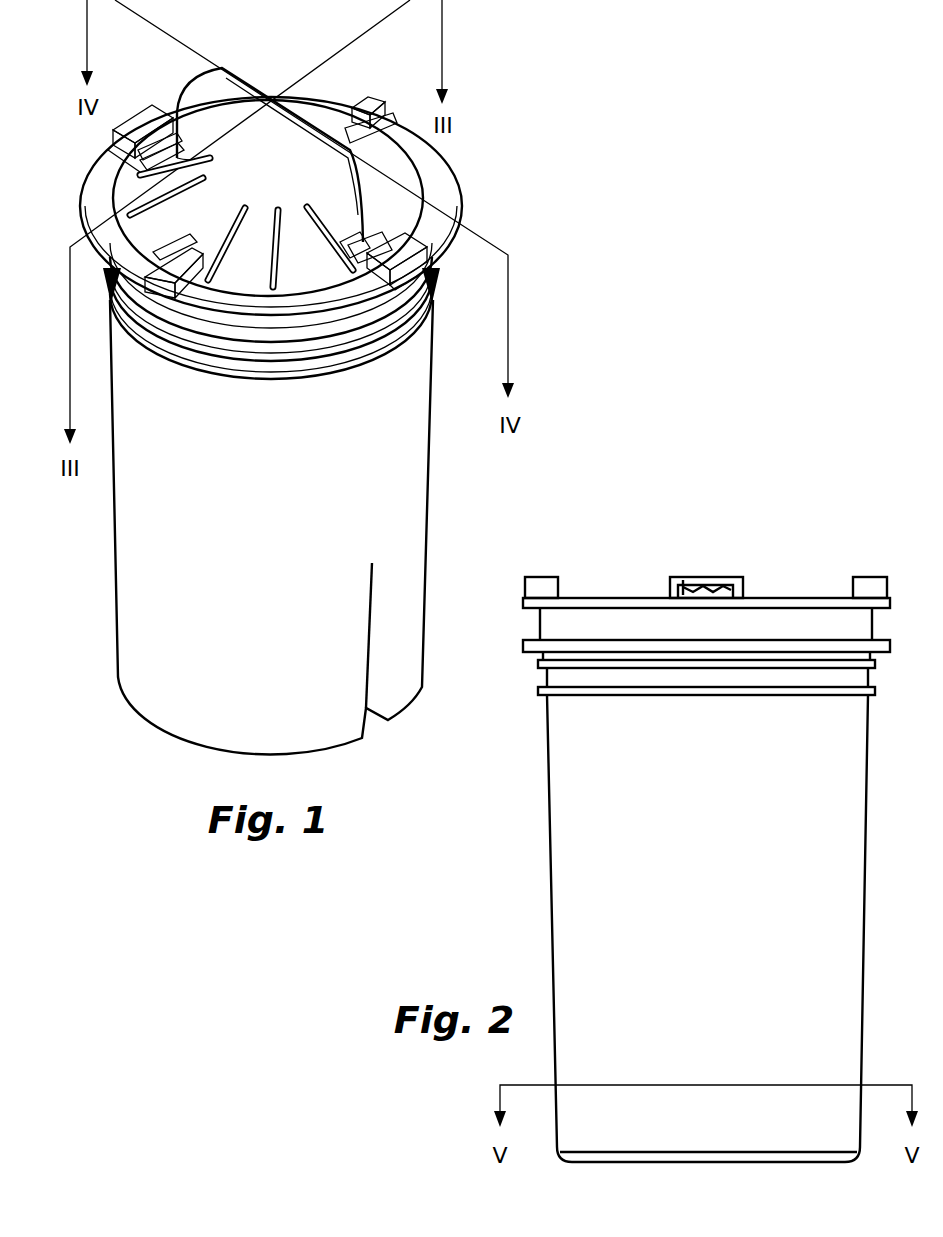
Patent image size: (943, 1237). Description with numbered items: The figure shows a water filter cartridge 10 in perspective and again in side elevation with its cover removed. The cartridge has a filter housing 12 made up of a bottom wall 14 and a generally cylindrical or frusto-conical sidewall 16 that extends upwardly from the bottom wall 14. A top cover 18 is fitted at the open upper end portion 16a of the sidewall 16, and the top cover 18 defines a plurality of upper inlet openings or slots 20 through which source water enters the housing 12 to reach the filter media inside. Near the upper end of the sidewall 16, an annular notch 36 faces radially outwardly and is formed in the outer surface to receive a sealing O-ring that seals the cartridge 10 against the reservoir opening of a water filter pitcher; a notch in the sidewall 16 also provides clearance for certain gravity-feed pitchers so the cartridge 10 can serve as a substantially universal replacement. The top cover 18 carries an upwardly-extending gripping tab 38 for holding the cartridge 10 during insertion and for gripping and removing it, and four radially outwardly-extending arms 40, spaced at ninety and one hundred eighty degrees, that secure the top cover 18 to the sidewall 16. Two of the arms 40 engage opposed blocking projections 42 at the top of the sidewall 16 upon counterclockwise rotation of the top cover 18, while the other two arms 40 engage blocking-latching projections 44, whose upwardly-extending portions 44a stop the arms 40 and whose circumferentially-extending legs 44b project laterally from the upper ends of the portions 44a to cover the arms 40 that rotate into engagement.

In FIG. 1, the water filter cartridge 10 is at (567, 141).
In FIG. 1, the filter housing 12 is at (443, 514).
In FIG. 2, the filter housing 12 is at (536, 882).
In FIG. 2, the bottom wall 14 is at (628, 1163).
In FIG. 1, the sidewall 16 is at (130, 540).
In FIG. 2, the sidewall 16 is at (577, 787).
In FIG. 1, the open upper end portion / notch 16a is at (396, 680).
In FIG. 1, the top cover 18 is at (390, 220).
In FIG. 1, the upper inlet openings or slots 20 is at (212, 191).
In FIG. 2, the annular notch 36 is at (502, 627).
In FIG. 1, the gripping tab 38 is at (193, 97).
In FIG. 1, the radially outwardly-extending arms 40 is at (380, 115).
In FIG. 1, the blocking projections 42 is at (367, 97).
In FIG. 2, the blocking projections 42 is at (550, 577).
In FIG. 1, the blocking-latching projections 44 is at (100, 133).
In FIG. 2, the blocking-latching projections 44 is at (657, 571).
In FIG. 1, the upwardly-extending portions 44a is at (92, 172).
In FIG. 2, the upwardly-extending portions 44a is at (670, 590).
In FIG. 1, the circumferentially-extending legs 44b is at (138, 120).
In FIG. 2, the circumferentially-extending legs 44b is at (693, 577).